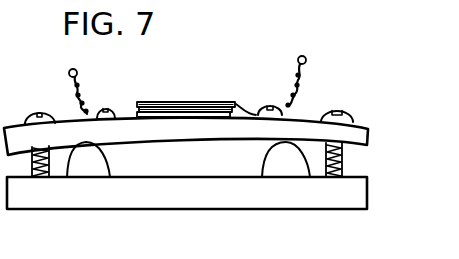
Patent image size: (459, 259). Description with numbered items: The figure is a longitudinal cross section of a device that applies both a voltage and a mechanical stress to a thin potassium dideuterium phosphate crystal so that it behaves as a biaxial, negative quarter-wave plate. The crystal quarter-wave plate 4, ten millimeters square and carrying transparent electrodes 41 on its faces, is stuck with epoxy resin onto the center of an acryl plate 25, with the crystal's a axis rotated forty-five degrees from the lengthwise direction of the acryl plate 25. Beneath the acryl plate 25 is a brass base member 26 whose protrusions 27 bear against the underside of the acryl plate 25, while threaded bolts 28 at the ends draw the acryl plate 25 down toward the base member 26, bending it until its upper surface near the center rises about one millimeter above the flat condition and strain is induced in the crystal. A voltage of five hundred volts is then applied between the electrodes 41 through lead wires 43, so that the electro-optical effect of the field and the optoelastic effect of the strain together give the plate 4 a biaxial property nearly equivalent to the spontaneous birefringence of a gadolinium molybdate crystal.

The KD2PO4 (λ/4)-plate 4 is at (205, 106).
The transparent electrodes 41 is at (157, 117).
The lead wires 43 is at (295, 97).
The acryl plate 25 is at (366, 128).
The brass base member 26 is at (246, 198).
The protrusions 27 is at (95, 171).
The threaded bolts 28 is at (329, 112).